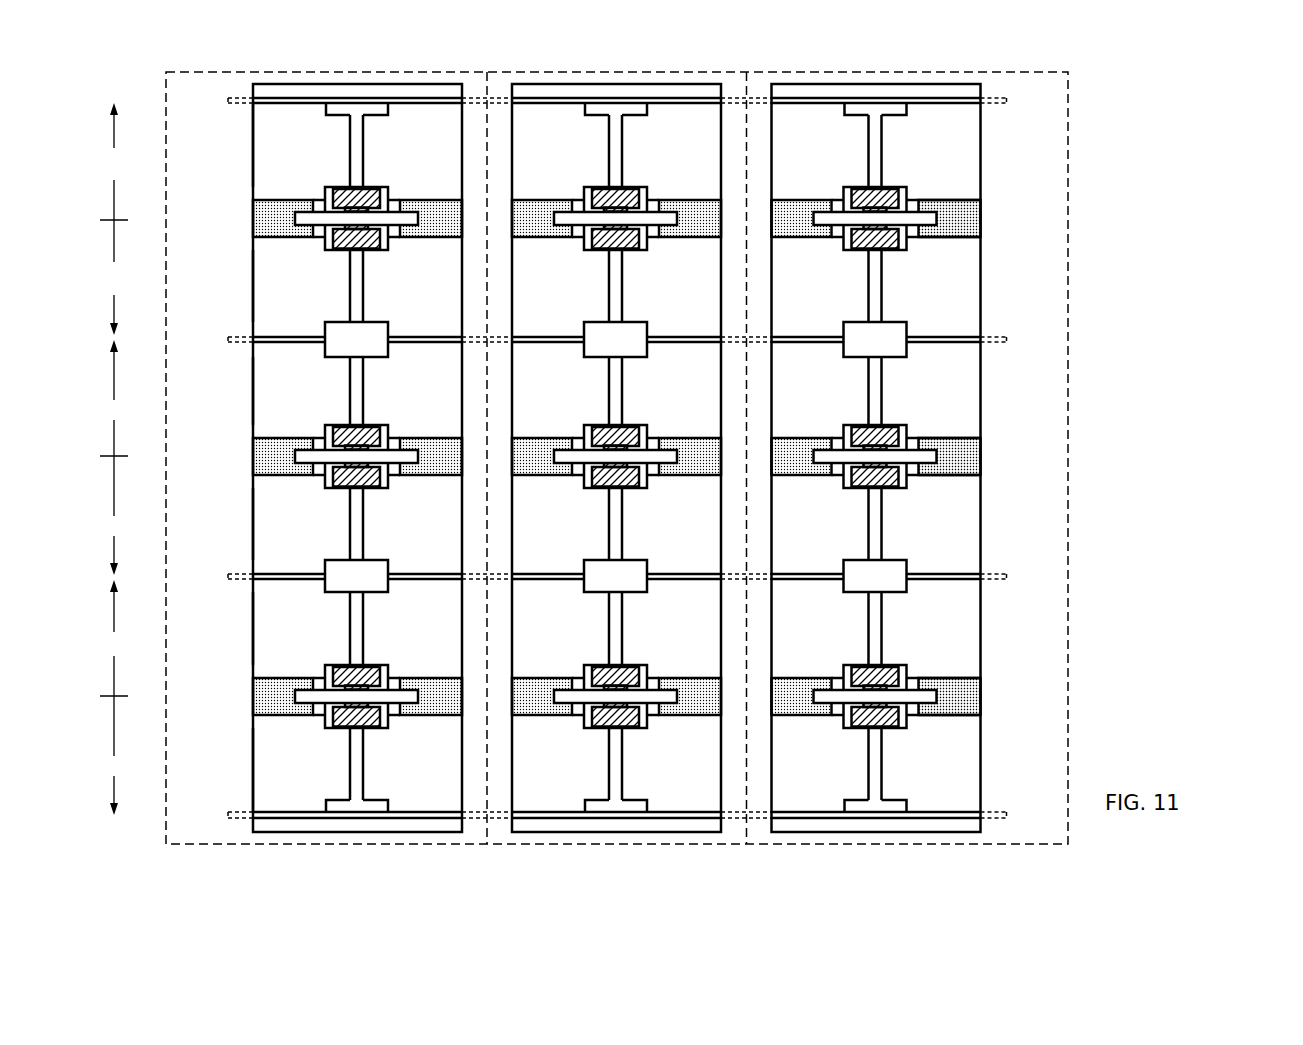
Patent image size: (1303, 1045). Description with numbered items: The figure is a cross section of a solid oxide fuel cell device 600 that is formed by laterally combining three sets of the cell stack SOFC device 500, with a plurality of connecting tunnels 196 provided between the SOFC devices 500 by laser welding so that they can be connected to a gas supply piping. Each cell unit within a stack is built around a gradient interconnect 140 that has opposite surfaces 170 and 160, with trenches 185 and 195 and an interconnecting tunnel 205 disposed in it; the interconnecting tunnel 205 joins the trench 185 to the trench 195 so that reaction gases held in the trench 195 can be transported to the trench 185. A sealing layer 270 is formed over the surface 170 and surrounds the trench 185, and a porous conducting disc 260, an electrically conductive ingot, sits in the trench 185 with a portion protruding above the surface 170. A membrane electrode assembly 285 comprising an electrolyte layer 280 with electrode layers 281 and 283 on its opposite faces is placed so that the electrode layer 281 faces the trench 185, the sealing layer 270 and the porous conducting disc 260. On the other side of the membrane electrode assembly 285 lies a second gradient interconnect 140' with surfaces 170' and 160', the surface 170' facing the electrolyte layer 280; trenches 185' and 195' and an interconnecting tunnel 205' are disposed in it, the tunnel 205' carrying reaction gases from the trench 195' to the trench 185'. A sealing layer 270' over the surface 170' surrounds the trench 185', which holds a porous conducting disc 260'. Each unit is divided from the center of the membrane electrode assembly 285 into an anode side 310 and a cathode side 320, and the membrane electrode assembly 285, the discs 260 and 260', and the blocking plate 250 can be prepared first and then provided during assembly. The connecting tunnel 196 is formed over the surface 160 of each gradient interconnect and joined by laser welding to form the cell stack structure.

The SOFC device 600 is at (1128, 110).
The SOFC device 500 is at (478, 63).
The blocking plate 250 is at (968, 90).
The connecting tunnel 196 is at (259, 99).
The surface 160 is at (586, 341).
The surface 160' is at (585, 568).
The trench 195 is at (678, 365).
The trench 195' is at (681, 551).
The interconnecting tunnel 205 is at (691, 390).
The interconnecting tunnel 205' is at (694, 525).
The gradient interconnect 140 is at (216, 384).
The gradient interconnect 140' is at (216, 531).
The trench 185 is at (678, 448).
The trench 185' is at (681, 494).
The surface 170 is at (576, 451).
The surface 170' is at (576, 464).
The porous conducting disc 260 is at (549, 427).
The porous conducting disc 260' is at (548, 484).
The sealing layer 270 is at (663, 449).
The sealing layer 270' is at (666, 474).
The electrode layer 283 is at (960, 201).
The electrolyte layer 280 is at (960, 220).
The electrode layer 281 is at (962, 238).
The membrane electrode assembly 285 is at (1048, 457).
The cathode side 320 is at (114, 399).
The anode side 310 is at (114, 517).